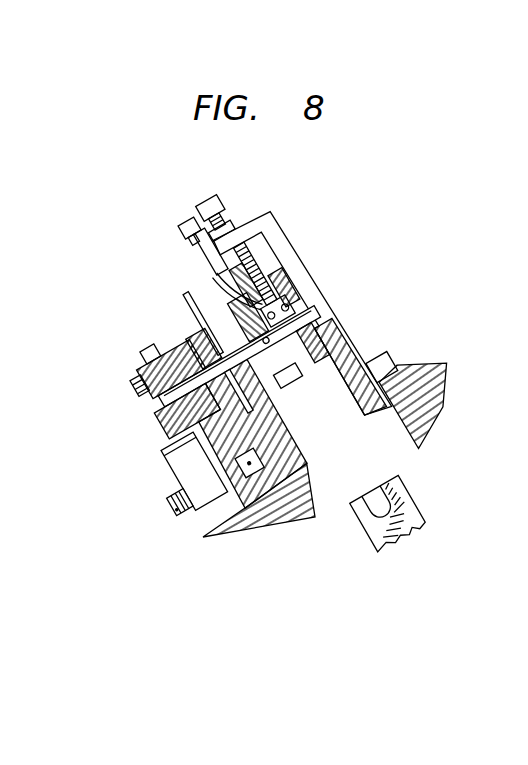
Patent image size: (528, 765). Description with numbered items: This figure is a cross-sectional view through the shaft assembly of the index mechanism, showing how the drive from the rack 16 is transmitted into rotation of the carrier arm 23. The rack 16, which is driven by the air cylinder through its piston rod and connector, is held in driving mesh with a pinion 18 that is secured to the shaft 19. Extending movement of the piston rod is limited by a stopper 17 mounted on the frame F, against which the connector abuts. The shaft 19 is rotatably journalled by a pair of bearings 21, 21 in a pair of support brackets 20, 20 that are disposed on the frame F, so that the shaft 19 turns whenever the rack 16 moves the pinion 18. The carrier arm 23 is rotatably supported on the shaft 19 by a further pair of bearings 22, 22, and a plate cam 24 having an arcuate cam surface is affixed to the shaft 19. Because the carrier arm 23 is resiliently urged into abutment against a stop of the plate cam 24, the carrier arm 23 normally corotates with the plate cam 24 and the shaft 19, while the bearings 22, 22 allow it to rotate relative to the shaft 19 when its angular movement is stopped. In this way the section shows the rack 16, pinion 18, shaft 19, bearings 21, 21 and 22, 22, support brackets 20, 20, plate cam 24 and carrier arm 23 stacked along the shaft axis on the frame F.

The frame F is at (280, 523).
The rack 16 is at (183, 453).
The stopper 17 is at (187, 473).
The pinion 18 is at (167, 354).
The shaft 19 is at (158, 405).
The support bracket 20 is at (300, 454).
The bearing 21 is at (308, 290).
The bearing 22 is at (212, 277).
The carrier arm 23 is at (265, 292).
The plate cam 24 is at (202, 252).